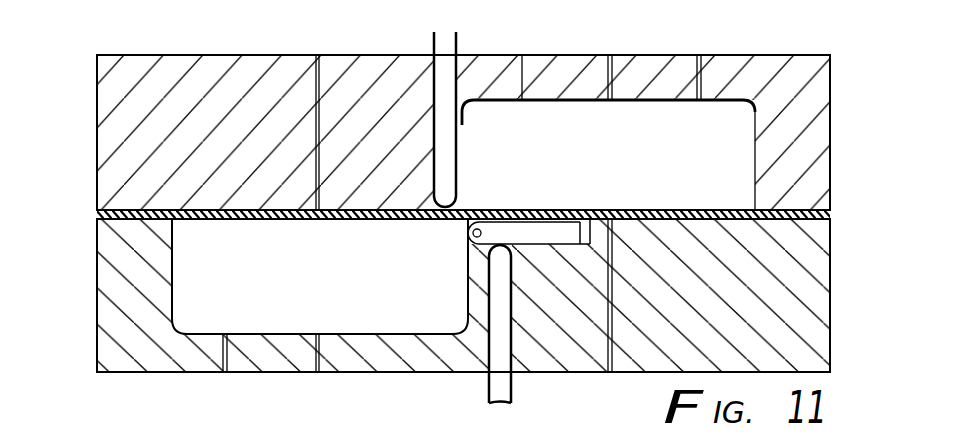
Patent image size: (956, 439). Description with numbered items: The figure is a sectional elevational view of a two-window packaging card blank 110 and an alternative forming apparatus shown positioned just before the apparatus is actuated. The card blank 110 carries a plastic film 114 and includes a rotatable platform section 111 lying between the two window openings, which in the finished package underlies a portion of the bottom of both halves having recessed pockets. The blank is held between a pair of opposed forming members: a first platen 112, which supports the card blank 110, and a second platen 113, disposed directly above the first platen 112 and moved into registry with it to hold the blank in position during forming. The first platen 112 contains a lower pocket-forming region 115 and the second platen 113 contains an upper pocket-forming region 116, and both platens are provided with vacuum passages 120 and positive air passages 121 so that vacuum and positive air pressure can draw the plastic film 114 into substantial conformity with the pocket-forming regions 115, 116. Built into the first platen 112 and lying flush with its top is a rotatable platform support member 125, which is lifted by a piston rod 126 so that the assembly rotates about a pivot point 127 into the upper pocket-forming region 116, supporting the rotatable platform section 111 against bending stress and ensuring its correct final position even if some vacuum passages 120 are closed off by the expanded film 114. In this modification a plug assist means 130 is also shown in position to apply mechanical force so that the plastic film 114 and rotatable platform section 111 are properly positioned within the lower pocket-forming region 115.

The packaging card blank 110 is at (97, 214).
The rotatable platform section 111 is at (432, 227).
The first platen 112 is at (795, 283).
The second platen 113 is at (110, 105).
The plastic film 114 is at (640, 210).
The lower pocket-forming region 115 is at (338, 295).
The upper pocket-forming region 116 is at (622, 141).
The vacuum passages 120 is at (700, 66).
The positive air passages 121 is at (317, 57).
The rotatable platform support member 125 is at (538, 232).
The piston rod 126 is at (487, 390).
The pivot point 127 is at (477, 212).
The plug assist means 130 is at (452, 40).